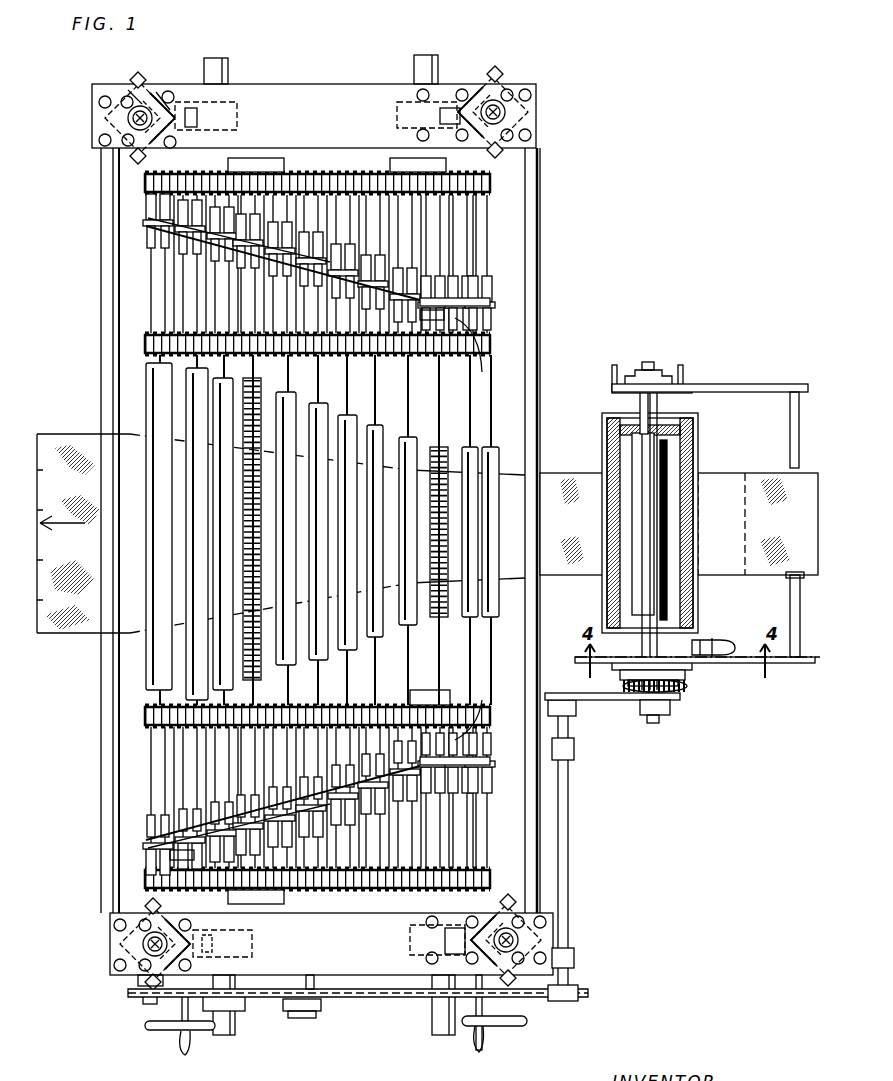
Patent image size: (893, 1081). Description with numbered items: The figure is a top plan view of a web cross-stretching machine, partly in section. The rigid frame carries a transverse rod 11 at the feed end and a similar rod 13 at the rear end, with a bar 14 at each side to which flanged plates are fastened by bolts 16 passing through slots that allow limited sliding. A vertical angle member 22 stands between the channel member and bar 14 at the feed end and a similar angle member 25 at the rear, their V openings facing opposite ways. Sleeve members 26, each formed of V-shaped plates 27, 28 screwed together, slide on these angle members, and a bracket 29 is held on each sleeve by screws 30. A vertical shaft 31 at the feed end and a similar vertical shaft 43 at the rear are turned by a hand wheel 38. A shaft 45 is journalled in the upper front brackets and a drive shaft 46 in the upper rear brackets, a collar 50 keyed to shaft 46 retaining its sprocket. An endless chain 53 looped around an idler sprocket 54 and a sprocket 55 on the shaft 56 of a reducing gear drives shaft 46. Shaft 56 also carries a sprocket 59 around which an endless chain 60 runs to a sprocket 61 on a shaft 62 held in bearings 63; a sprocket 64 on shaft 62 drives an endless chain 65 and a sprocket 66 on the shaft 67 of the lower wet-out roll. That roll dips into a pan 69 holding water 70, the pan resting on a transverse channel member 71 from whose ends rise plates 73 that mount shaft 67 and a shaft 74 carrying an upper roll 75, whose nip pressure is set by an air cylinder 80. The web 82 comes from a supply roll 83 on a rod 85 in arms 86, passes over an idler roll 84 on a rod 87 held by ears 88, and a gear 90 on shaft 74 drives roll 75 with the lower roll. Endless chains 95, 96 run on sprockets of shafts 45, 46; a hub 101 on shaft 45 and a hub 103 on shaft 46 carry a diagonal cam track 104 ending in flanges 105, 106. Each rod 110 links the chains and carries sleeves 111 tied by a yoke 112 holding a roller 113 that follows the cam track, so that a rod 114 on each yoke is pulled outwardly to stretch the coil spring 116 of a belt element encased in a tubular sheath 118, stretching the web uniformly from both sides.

The transverse rod 11 is at (540, 190).
The rod 13 is at (100, 290).
The bar 14 is at (312, 88).
The bolts 16 is at (103, 96).
The angle member 22 is at (460, 100).
The angle member 25 is at (158, 96).
The upper sleeve member 26 is at (520, 990).
The V-shaped plate 27 is at (168, 100).
The V-shaped plate 28 is at (132, 94).
The bracket 29 is at (240, 118).
The screws 30 is at (218, 950).
The vertical shaft 31 is at (505, 115).
The hand wheel 38 is at (150, 1028).
The vertical shaft 43 is at (128, 118).
The shaft 45 is at (438, 60).
The drive shaft 46 is at (228, 65).
The collar 50 is at (245, 1005).
The endless chain 53 is at (143, 1002).
The idler sprocket 54 is at (138, 985).
The sprocket 55 is at (318, 999).
The shaft 56 is at (308, 975).
The sprocket 59 is at (308, 1018).
The endless chain 60 is at (370, 1000).
The sprocket 61 is at (578, 992).
The shaft 62 is at (570, 822).
The bearings 63 is at (575, 748).
The sprocket 64 is at (562, 700).
The endless chain 65 is at (610, 702).
The sprocket 66 is at (670, 708).
The shaft 67 is at (655, 724).
The pan 69 is at (698, 420).
The water 70 is at (694, 592).
The transverse channel member 71 is at (665, 378).
The plates 73 is at (612, 388).
The shaft 74 is at (660, 410).
The upper roll 75 is at (622, 436).
The air cylinder 80 is at (712, 640).
The web 82 is at (66, 433).
The supply roll 83 is at (798, 578).
The idler roll 84 is at (640, 452).
The rod 85 is at (790, 424).
The arms 86 is at (720, 384).
The rod 87 is at (640, 402).
The ears 88 is at (654, 364).
The gear 90 is at (688, 690).
The endless chain 95 is at (145, 344).
The endless chain 96 is at (298, 172).
The hub 101 is at (490, 300).
The hub 103 is at (215, 268).
The cam track 104 is at (400, 158).
The flange 105 is at (482, 372).
The flange 106 is at (170, 236).
The rod 110 is at (470, 256).
The sleeve 111 is at (444, 312).
The yoke 112 is at (165, 225).
The roller 113 is at (215, 218).
The rod 114 is at (158, 320).
The coil spring 116 is at (260, 390).
The tubular sheath 118 is at (328, 403).